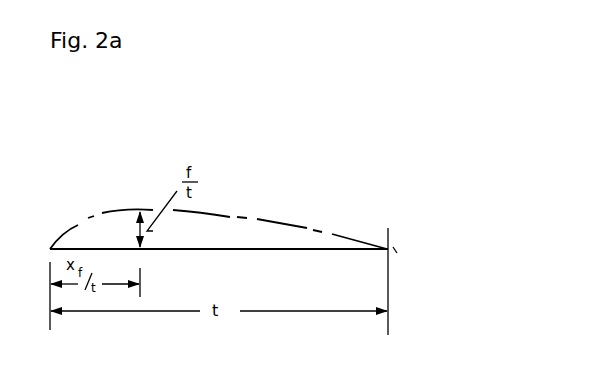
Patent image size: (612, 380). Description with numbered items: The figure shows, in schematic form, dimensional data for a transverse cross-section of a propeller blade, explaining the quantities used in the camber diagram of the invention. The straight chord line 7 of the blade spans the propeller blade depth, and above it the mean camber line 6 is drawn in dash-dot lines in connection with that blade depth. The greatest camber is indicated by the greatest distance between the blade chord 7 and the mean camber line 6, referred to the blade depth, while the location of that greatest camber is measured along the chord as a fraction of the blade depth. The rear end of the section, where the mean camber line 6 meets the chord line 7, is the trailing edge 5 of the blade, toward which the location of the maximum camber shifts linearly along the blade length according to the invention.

The trailing edge 5 is at (392, 247).
The mean camber line 6 is at (290, 215).
The chord line 7 is at (357, 259).